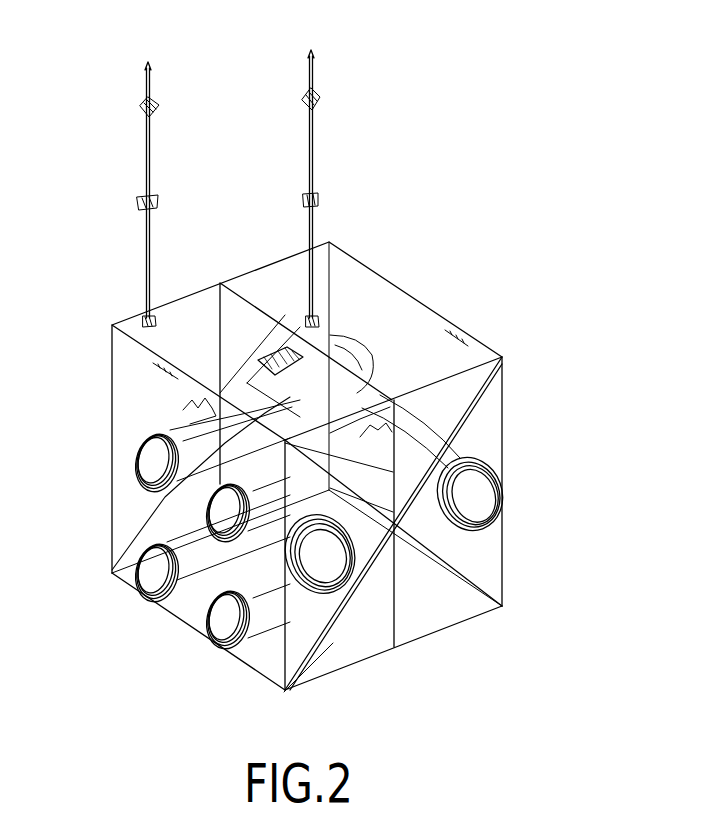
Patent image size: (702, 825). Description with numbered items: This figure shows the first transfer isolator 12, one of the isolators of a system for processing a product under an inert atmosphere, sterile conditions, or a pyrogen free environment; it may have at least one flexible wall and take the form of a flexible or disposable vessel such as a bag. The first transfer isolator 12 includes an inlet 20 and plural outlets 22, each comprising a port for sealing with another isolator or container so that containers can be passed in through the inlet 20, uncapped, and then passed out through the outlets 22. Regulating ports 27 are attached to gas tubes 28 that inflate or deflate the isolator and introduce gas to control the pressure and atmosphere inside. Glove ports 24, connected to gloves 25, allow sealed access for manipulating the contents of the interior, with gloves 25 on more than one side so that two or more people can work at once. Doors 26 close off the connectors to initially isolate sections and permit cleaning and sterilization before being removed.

The first transfer isolator 12 is at (465, 248).
The inlet 20 is at (275, 342).
The outlet 22 is at (503, 482).
The glove port 24 is at (137, 463).
The glove 25 is at (172, 432).
The door 26 is at (470, 503).
The regulating port 27 is at (138, 317).
The gas tube 28 is at (143, 263).